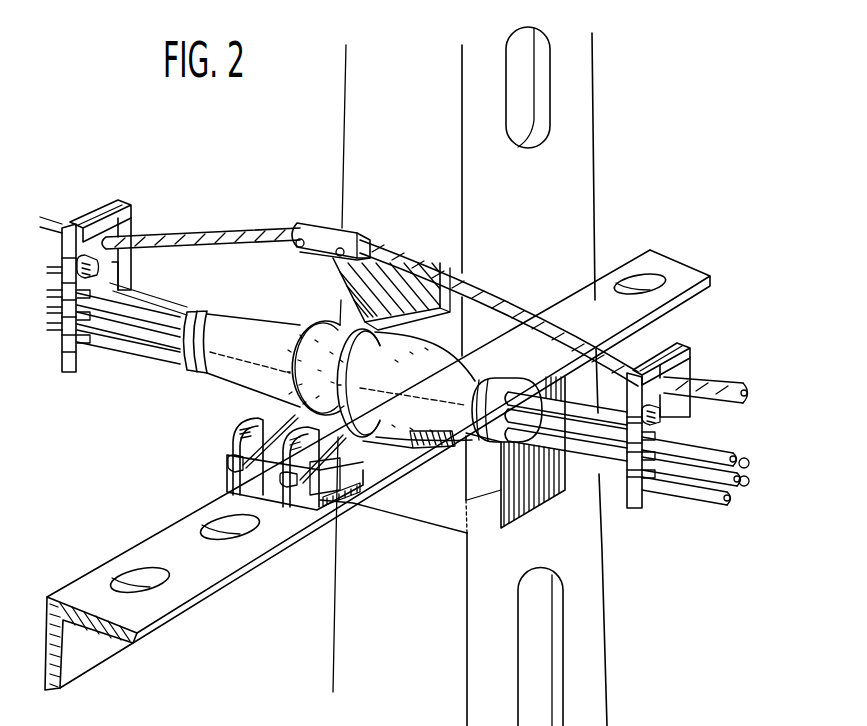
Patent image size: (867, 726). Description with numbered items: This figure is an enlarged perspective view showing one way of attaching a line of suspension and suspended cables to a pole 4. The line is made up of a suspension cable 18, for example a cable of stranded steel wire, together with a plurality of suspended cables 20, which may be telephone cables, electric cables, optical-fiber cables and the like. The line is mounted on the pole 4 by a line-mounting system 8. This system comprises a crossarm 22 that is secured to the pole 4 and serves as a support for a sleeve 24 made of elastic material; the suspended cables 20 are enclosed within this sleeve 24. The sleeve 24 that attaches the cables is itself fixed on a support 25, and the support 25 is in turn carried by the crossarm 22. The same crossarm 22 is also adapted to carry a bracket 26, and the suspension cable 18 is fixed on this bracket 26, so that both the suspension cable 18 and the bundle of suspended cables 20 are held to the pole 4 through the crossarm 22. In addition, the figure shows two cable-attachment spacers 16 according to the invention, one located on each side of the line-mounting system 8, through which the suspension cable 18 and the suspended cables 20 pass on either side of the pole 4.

The pole 4 is at (598, 548).
The line-mounting system 8 is at (255, 275).
The cable-attachment spacer 16 is at (108, 176).
The suspension cable 18 is at (495, 290).
The suspended cables 20 is at (714, 512).
The crossarm 22 is at (120, 562).
The sleeve 24 is at (240, 372).
The support 25 is at (235, 436).
The bracket 26 is at (318, 230).